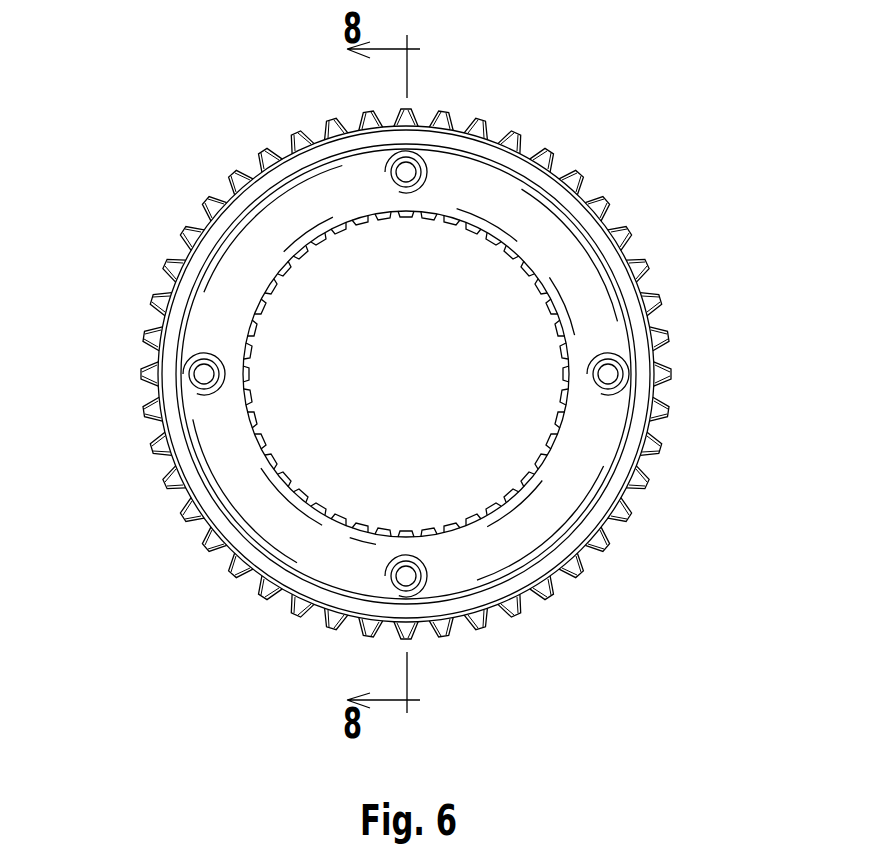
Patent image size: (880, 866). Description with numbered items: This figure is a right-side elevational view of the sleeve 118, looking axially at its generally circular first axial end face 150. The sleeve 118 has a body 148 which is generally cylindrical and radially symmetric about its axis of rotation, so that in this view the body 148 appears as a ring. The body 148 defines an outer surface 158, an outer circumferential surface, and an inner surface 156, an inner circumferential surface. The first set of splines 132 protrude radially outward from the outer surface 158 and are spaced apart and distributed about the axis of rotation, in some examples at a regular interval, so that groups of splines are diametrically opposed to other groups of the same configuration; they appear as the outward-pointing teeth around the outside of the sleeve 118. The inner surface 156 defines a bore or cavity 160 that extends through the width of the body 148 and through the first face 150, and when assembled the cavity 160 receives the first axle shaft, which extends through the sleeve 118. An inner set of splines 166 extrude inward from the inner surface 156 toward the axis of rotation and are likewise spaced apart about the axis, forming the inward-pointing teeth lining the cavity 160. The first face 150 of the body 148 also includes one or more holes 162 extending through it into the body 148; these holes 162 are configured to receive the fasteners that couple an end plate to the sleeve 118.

The sleeve 118 is at (700, 185).
The first set of splines 132 is at (140, 373).
The body 148 is at (303, 200).
The first axial end face 150 is at (506, 200).
The inner surface 156 is at (543, 285).
The outer surface 158 is at (660, 357).
The cavity 160 is at (348, 485).
The holes 162 is at (425, 573).
The inner set of splines 166 is at (535, 472).